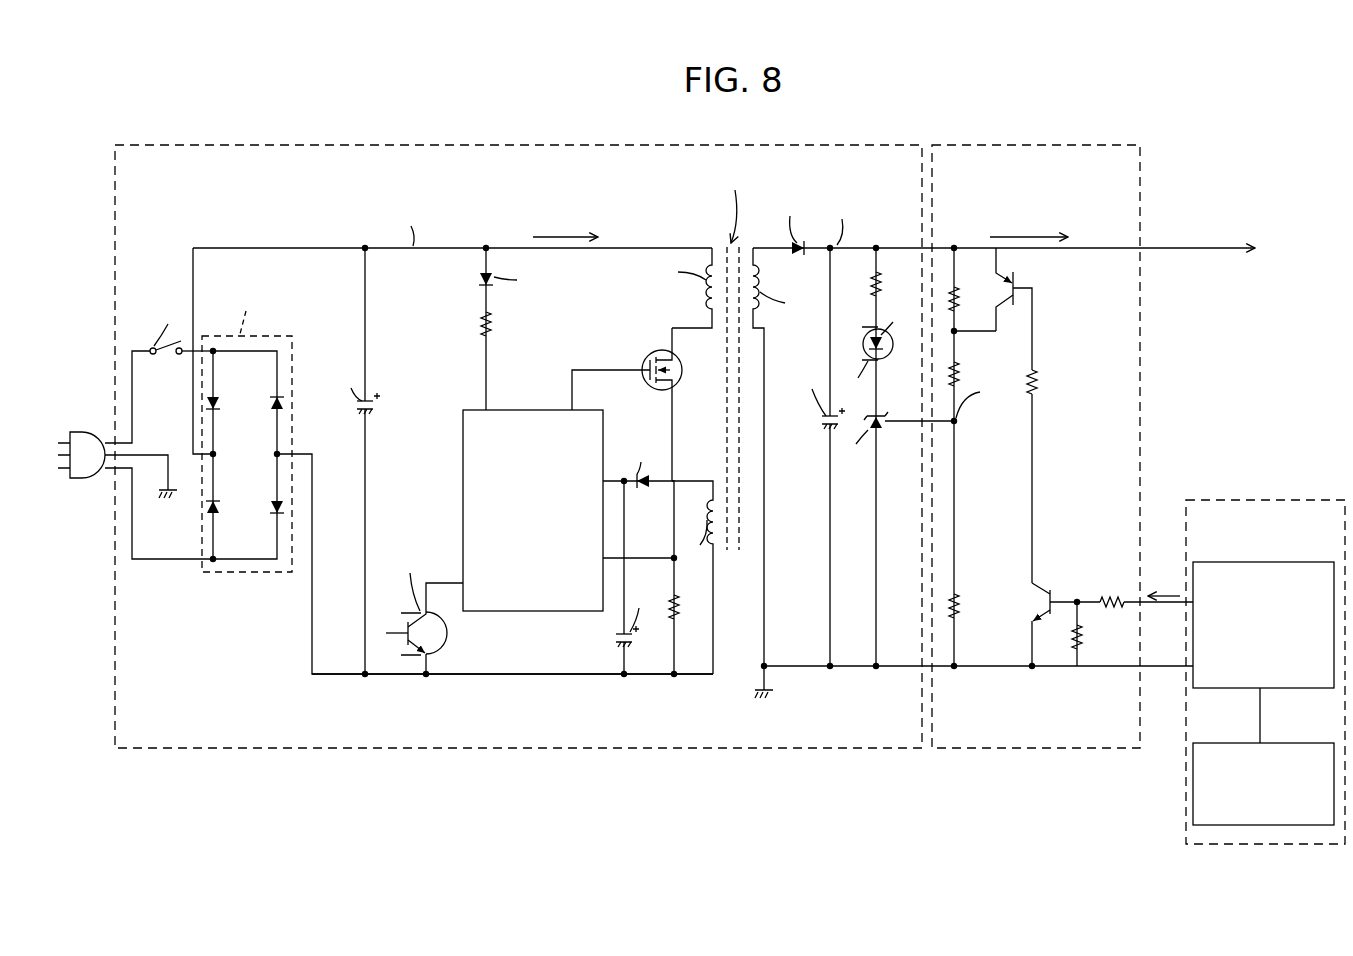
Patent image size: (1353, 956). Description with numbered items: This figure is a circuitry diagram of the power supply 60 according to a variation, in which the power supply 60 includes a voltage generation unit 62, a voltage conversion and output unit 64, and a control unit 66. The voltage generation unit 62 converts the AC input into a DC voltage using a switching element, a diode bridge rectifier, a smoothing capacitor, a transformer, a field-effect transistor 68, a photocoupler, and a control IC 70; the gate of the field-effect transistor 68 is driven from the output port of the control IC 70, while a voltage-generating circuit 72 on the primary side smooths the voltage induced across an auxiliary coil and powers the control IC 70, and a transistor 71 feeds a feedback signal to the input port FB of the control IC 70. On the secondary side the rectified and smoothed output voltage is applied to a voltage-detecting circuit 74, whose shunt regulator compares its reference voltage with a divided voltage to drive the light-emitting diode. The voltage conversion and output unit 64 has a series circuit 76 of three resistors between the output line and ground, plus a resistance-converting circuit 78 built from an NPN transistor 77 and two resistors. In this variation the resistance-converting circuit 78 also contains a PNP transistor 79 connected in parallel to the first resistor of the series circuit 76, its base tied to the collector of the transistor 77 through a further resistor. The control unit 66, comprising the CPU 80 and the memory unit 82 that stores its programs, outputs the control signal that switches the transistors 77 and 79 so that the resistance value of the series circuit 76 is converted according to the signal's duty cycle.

The power supply 60 is at (1134, 96).
The voltage generation unit 62 is at (620, 143).
The voltage conversion and output unit 64 is at (1016, 143).
The control unit 66 is at (1272, 498).
The field-effect transistor 68 is at (652, 353).
The control IC 70 is at (540, 408).
The transistor 71 is at (409, 641).
The voltage-generating circuit 72 is at (642, 686).
The voltage-detecting circuit 74 is at (855, 488).
The series circuit 76 is at (969, 352).
The transistor 77 is at (1051, 592).
The resistance-converting circuit 78 is at (1081, 557).
The transistor 79 is at (1016, 284).
The CPU 80 is at (1277, 561).
The memory unit 82 is at (1277, 742).